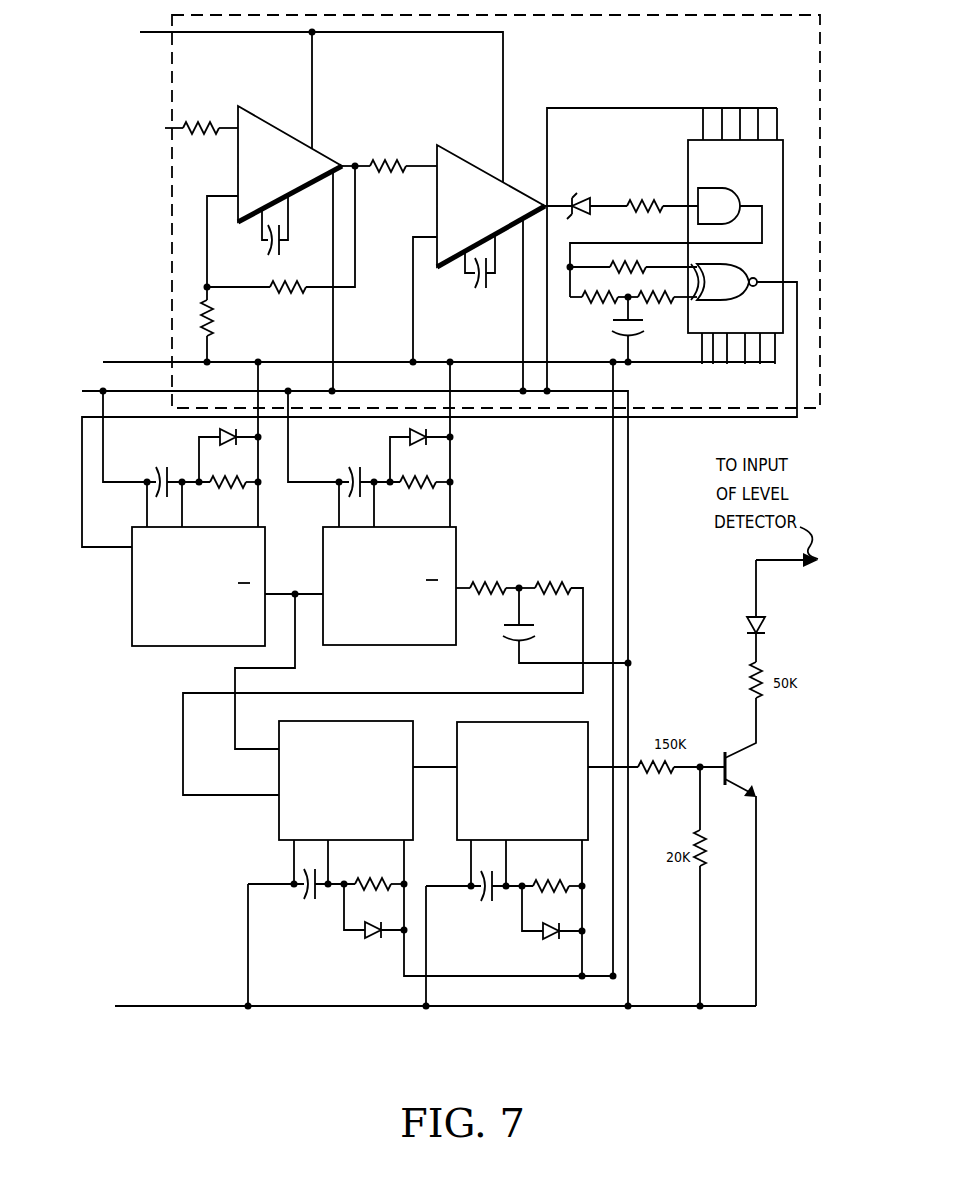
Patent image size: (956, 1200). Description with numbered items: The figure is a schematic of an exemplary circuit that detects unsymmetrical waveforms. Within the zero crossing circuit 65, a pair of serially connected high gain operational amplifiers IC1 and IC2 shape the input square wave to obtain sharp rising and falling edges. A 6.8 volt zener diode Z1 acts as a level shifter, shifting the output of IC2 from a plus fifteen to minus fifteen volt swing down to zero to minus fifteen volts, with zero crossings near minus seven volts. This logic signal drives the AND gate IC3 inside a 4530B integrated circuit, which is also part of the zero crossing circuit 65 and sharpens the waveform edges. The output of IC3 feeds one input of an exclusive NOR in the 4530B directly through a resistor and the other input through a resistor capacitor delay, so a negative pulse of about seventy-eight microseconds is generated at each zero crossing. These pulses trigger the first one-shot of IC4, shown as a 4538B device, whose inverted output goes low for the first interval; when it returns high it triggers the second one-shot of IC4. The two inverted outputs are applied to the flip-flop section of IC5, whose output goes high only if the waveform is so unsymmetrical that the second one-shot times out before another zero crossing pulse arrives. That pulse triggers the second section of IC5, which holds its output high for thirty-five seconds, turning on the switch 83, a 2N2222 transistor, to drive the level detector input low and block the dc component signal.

The zero crossing circuit 65 is at (172, 263).
The switch 83 is at (766, 855).
The high gain operational amplifier IC1 is at (295, 160).
The high gain operational amplifier IC2 is at (487, 193).
The AND gate IC3 is at (672, 249).
The one-shot IC4 is at (285, 504).
The flip-flop IC5 is at (429, 865).
The zener diode Z1 is at (586, 209).
The integrated circuit 4530B is at (685, 249).
The 4538B dual monostable multivibrator 4538B is at (361, 686).
The transistor 2N2222 is at (762, 774).